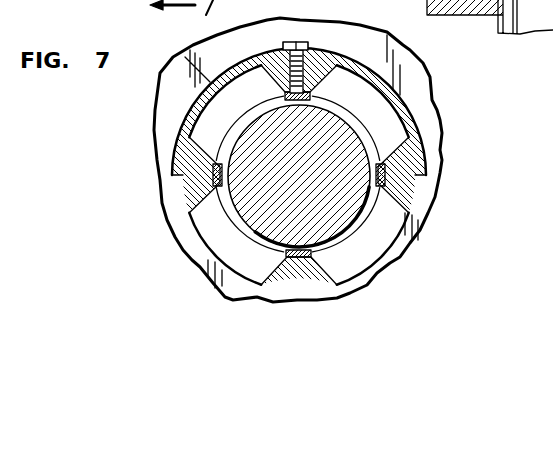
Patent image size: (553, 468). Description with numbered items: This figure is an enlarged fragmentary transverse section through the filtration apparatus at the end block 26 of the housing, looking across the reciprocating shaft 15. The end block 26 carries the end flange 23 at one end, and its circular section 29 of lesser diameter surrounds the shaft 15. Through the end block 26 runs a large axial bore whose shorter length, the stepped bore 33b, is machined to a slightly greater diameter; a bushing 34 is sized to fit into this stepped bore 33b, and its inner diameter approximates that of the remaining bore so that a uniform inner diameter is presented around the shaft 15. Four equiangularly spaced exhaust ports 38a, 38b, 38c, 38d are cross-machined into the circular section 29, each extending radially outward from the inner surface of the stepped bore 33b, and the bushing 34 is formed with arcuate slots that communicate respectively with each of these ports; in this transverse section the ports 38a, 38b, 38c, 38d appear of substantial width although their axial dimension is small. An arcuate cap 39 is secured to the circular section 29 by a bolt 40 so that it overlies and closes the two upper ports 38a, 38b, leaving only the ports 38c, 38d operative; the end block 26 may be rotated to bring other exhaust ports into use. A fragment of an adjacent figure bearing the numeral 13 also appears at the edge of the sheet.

The adjacent figure fragment 13 is at (545, 23).
The shaft 15 is at (300, 167).
The end flange 23 is at (422, 105).
The end block 26 is at (433, 129).
The circular section 29 is at (185, 200).
The stepped bore 33b is at (247, 237).
The bushing 34 is at (343, 227).
The exhaust port 38a is at (203, 120).
The exhaust port 38b is at (353, 87).
The exhaust port 38c is at (372, 245).
The exhaust port 38d is at (217, 248).
The arcuate cap 39 is at (185, 58).
The bolt 40 is at (283, 45).